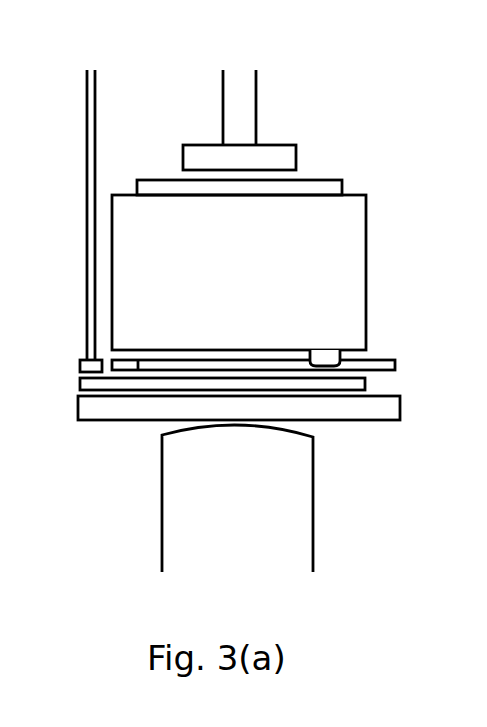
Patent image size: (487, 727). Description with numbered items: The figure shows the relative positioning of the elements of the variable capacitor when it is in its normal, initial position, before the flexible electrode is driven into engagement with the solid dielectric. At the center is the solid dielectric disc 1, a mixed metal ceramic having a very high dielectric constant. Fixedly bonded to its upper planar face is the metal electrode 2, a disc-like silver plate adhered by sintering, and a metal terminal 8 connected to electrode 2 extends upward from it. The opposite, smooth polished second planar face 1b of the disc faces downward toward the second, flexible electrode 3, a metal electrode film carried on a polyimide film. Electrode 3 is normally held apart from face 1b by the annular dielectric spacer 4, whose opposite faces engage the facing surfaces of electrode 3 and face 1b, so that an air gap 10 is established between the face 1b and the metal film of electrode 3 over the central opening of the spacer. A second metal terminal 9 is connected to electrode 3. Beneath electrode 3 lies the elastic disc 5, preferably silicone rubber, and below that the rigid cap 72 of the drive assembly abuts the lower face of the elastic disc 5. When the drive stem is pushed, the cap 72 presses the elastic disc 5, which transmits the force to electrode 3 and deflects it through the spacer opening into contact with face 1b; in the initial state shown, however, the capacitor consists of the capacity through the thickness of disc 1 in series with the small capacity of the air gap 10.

The solid dielectric disc 1 is at (366, 230).
The second planar face 1b is at (340, 360).
The metal electrode 2 is at (320, 188).
The flexible electrode 3 is at (80, 382).
The annular dielectric spacer 4 is at (400, 363).
The elastic disc 5 is at (103, 412).
The metal terminal 8 is at (223, 100).
The metal terminal 9 is at (87, 173).
The air gap 10 is at (278, 362).
The cap 72 is at (313, 533).